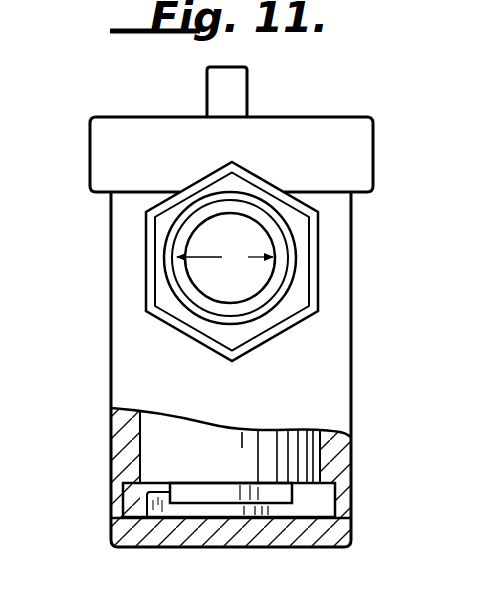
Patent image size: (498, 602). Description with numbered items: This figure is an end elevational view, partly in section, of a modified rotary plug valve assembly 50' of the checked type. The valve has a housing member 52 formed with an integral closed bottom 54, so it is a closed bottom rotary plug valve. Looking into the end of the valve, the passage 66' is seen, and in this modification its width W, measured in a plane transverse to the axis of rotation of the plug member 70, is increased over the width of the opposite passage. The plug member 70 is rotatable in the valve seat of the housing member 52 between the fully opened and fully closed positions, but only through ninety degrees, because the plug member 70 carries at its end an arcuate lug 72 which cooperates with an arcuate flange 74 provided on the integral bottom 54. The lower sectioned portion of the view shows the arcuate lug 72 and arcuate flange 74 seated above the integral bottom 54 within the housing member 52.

The rotary plug valve assembly 50' is at (266, 307).
The housing member 52 is at (111, 452).
The integral closed bottom 54 is at (267, 547).
The passage 66' is at (221, 302).
The plug member 70 is at (323, 460).
The arcuate lug 72 is at (290, 497).
The arcuate flange 74 is at (148, 505).